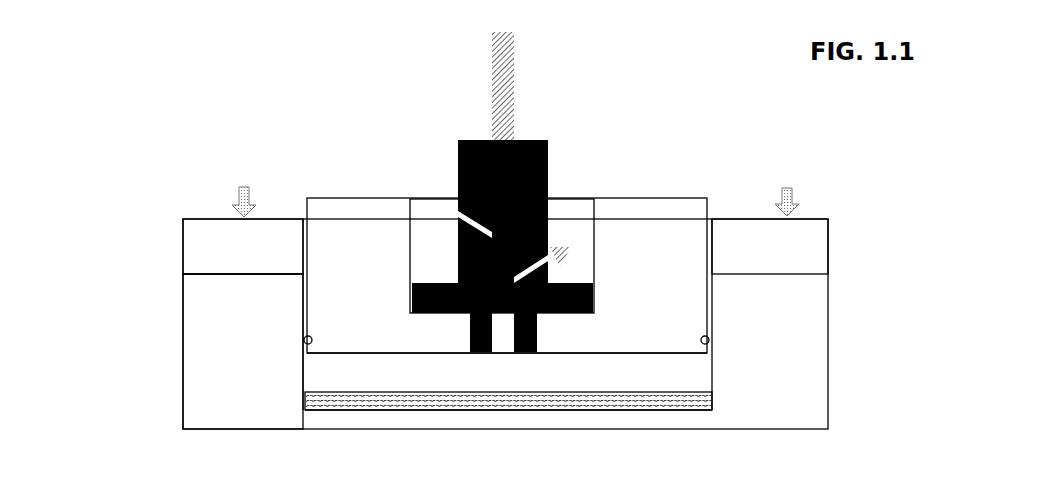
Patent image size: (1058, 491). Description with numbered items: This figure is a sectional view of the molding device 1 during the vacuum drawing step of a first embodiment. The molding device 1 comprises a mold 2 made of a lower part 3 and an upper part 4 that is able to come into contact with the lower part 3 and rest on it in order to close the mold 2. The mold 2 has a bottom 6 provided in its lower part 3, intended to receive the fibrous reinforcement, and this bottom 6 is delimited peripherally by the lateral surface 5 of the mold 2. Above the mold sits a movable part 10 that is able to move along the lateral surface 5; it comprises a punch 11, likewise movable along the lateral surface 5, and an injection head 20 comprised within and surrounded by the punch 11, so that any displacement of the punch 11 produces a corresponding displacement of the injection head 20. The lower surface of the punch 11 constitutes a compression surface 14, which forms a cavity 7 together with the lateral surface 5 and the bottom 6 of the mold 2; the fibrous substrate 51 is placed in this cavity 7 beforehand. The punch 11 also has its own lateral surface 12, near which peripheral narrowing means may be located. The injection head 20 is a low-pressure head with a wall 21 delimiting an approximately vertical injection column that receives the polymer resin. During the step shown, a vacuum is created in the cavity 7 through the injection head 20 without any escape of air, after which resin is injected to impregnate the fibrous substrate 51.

The molding device 1 is at (190, 149).
The movable part 10 is at (397, 158).
The mold 2 is at (177, 297).
The upper part 4 is at (183, 244).
The lower part 3 is at (181, 342).
The lateral surface of the punch 12 is at (712, 262).
The punch 11 is at (695, 210).
The compression surface 14 is at (702, 353).
The injection head 20 is at (560, 153).
The wall 21 is at (548, 185).
The fibrous substrate 51 is at (305, 402).
The bottom 6 is at (327, 412).
The lateral surface 5 is at (715, 370).
The cavity 7 is at (657, 382).